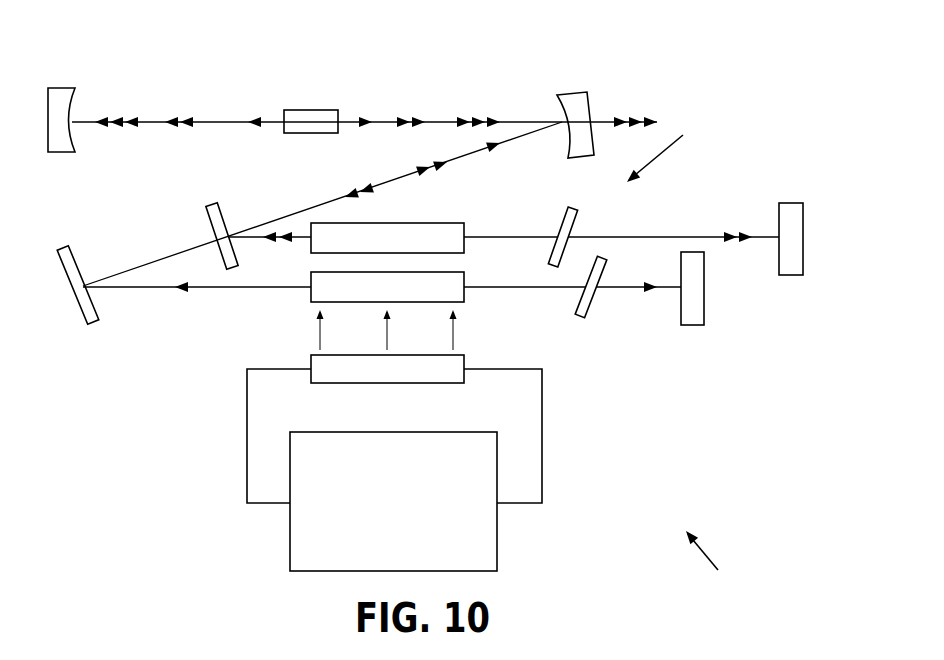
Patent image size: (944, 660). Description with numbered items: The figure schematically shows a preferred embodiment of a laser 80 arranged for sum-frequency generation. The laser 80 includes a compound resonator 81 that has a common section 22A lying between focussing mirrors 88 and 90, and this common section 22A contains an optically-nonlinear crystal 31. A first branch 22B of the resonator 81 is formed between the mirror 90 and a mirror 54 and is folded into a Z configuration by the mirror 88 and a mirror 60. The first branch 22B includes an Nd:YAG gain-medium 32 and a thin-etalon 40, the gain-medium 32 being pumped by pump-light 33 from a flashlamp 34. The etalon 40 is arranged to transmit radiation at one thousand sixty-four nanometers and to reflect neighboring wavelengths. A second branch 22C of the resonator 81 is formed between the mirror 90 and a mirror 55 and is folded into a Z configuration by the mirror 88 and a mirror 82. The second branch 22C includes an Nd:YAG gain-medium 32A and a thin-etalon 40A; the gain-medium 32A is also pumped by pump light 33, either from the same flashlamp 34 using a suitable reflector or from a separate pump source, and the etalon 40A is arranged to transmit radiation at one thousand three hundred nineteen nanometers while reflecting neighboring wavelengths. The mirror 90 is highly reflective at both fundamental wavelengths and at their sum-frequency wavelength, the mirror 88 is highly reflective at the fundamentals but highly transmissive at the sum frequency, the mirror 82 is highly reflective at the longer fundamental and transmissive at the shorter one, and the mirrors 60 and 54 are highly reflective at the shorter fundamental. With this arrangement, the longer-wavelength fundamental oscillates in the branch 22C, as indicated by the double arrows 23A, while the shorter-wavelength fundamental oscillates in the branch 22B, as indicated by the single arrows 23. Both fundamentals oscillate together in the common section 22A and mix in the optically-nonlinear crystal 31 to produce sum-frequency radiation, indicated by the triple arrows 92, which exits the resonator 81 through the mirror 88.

The focussing mirror 90 is at (60, 88).
The common section 22A is at (248, 110).
The optically-nonlinear crystal 31 is at (300, 110).
The single arrows 23 is at (368, 118).
The double arrows 23A is at (425, 118).
The triple arrows 92 is at (495, 118).
The focussing mirror 88 is at (575, 95).
The compound resonator 81 is at (673, 151).
The mirror 82 is at (207, 212).
The mirror 60 is at (92, 323).
The second branch 22C is at (545, 234).
The first branch 22B is at (561, 322).
The Nd:YAG gain-medium 32A is at (390, 225).
The Nd:YAG gain-medium 32 is at (312, 297).
The pump-light 33 is at (452, 331).
The thin-etalon 40A is at (575, 222).
The thin-etalon 40 is at (585, 316).
The mirror 54 is at (692, 323).
The mirror 55 is at (789, 271).
The flashlamp 34 is at (447, 381).
The laser 80 is at (719, 564).